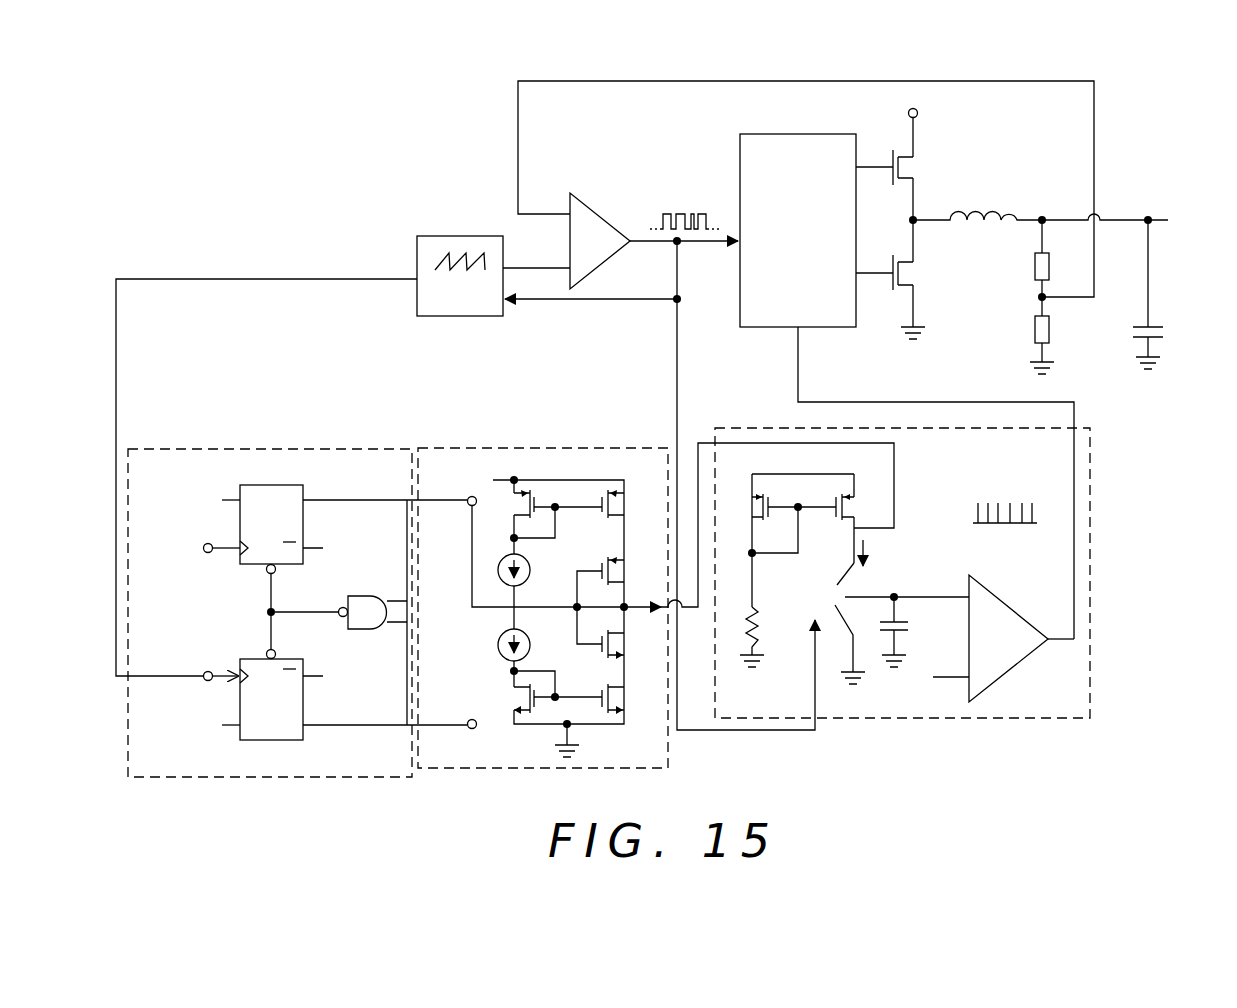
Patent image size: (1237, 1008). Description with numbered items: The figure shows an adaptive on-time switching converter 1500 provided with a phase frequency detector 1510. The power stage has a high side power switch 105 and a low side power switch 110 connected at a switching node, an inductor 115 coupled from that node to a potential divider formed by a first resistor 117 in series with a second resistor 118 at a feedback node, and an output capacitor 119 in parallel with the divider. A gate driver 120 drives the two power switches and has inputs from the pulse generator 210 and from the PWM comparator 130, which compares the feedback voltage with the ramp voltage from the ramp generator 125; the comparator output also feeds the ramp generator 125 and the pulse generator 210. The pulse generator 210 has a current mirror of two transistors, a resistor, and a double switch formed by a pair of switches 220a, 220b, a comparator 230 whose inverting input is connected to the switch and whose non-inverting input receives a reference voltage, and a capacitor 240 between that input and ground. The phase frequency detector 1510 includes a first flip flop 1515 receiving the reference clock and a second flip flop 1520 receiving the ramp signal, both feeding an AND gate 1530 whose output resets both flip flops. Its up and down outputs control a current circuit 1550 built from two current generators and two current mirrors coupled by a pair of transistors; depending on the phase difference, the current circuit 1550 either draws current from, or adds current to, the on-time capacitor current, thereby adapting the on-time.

The adaptive on-time switching converter 1500 is at (1174, 579).
The ramp generator 125 is at (475, 236).
The PWM comparator 130 is at (603, 212).
The gate driver 120 is at (798, 230).
The high side power switch 105 is at (918, 169).
The low side power switch 110 is at (918, 276).
The inductor 115 is at (984, 205).
The first resistor 117 is at (1023, 272).
The second resistor 118 is at (1025, 333).
The output capacitor 119 is at (1127, 333).
The phase frequency detector 1510 is at (317, 449).
The first flip flop 1515 is at (257, 485).
The second flip flop 1520 is at (257, 740).
The AND gate 1530 is at (363, 596).
The current circuit 1550 is at (583, 448).
The pulse generator 210 is at (1090, 504).
The switch 220a is at (838, 578).
The switch 220b is at (843, 636).
The comparator 230 is at (1017, 667).
The capacitor C1 240 is at (910, 642).